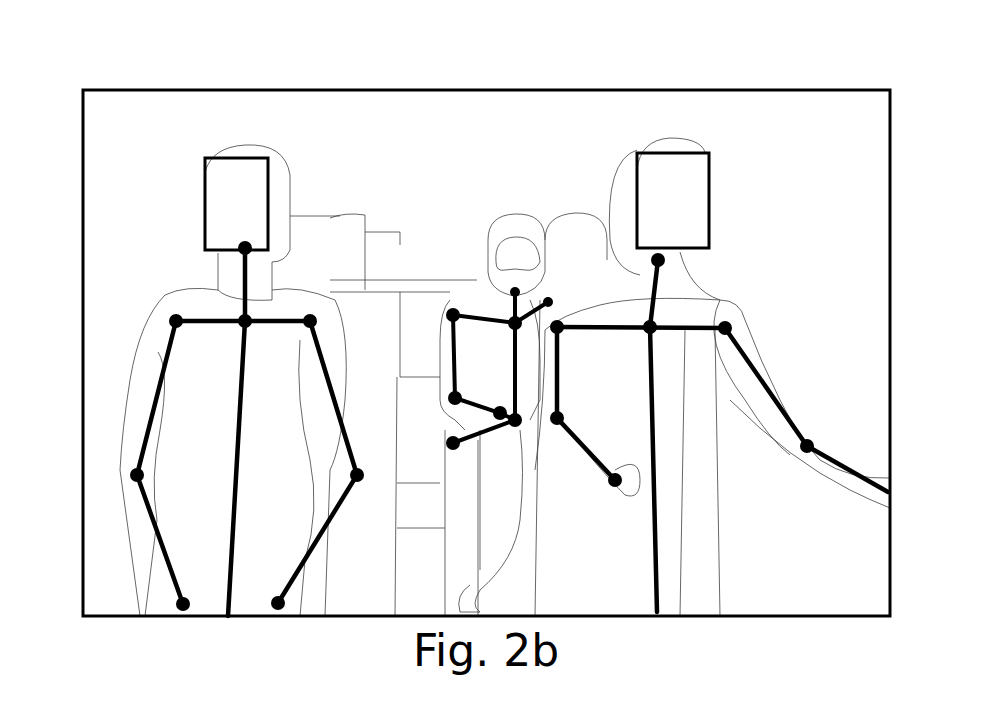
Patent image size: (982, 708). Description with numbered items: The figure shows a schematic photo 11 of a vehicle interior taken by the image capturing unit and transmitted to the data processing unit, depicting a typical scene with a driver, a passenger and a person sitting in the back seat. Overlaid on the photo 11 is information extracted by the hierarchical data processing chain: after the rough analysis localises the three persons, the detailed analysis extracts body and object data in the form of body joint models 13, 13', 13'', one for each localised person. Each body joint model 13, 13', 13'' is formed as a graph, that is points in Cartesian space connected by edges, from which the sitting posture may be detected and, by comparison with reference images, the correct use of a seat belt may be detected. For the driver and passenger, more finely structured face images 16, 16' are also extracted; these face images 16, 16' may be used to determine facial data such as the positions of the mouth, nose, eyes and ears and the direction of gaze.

The photo 11 is at (612, 90).
The body joint model 13 is at (193, 405).
The body joint model 13' is at (746, 432).
The body joint model 13'' is at (464, 245).
The face image 16 is at (259, 150).
The face image 16' is at (698, 146).